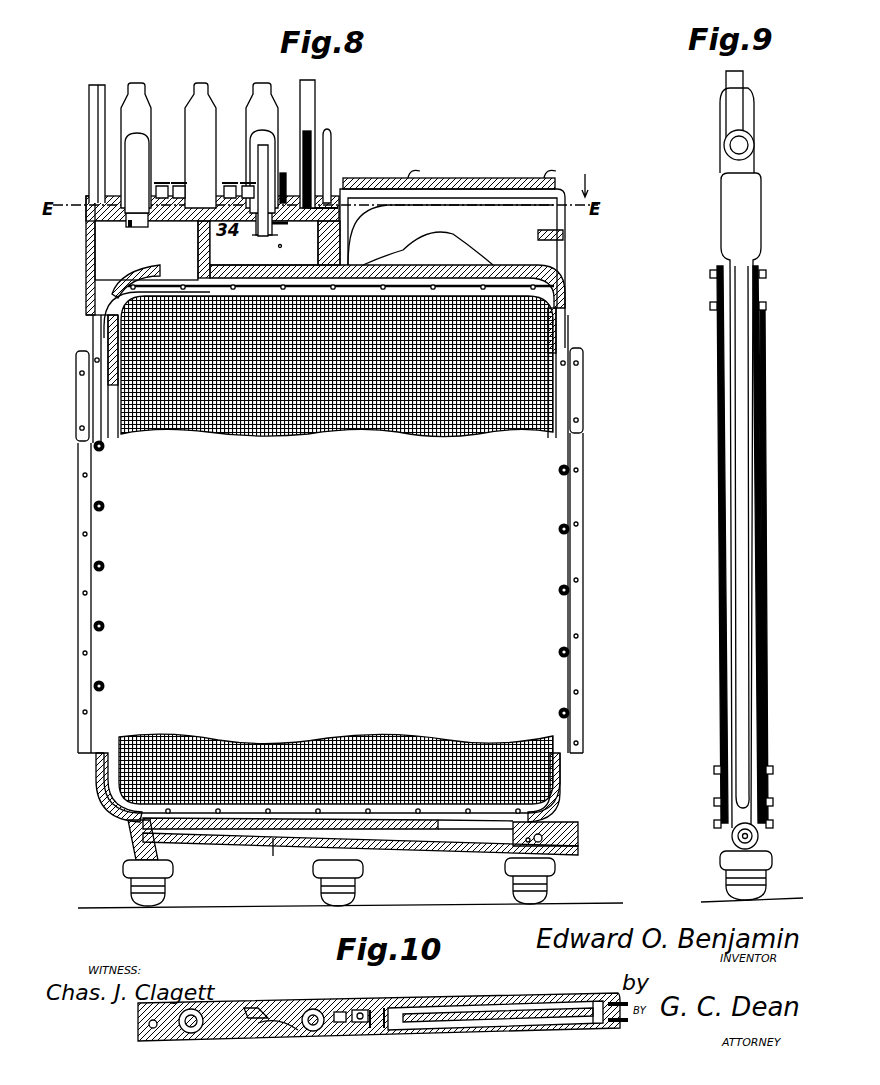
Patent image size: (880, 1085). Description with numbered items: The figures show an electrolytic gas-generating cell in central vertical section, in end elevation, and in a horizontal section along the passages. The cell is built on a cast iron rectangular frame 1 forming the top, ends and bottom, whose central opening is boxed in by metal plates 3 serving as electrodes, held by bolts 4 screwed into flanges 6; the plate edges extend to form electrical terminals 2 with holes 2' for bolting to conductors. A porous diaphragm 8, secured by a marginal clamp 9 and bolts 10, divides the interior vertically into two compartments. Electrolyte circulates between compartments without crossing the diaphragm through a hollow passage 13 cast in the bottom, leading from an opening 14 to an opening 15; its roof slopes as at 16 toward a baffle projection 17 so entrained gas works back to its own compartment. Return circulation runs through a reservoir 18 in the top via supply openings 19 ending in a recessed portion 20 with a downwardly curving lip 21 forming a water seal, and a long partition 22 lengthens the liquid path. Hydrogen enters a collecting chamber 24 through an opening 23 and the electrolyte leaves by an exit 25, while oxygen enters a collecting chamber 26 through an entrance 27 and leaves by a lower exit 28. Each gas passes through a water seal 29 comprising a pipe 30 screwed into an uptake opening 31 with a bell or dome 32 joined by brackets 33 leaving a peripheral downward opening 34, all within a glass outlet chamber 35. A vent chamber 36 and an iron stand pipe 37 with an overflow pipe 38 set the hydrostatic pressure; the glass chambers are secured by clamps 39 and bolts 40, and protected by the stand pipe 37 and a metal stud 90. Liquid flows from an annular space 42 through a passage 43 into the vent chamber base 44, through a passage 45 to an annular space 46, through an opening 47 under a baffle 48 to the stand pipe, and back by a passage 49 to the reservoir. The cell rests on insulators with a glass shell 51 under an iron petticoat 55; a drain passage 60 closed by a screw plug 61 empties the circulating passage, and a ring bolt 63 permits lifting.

In FIG. 8, the rectangular frame 1 is at (547, 336).
In FIG. 9, the rectangular frame 1 is at (750, 230).
In FIG. 8, the electrical terminals 2 is at (325, 563).
In FIG. 8, the holes 2' is at (598, 424).
In FIG. 8, the metal plates 3 is at (329, 595).
In FIG. 9, the metal plates 3 is at (712, 478).
In FIG. 9, the bolts 4 is at (759, 296).
In FIG. 8, the flanges 6 is at (68, 356).
In FIG. 8, the diaphragm 8 is at (409, 427).
In FIG. 8, the rectangular marginal clamp 9 is at (100, 800).
In FIG. 8, the bolts 10 is at (100, 378).
In FIG. 8, the hollow passage 13 is at (290, 834).
In FIG. 8, the opening 14 is at (475, 830).
In FIG. 8, the opening 15 is at (126, 838).
In FIG. 8, the sloping roof 16 is at (265, 848).
In FIG. 8, the baffle projection 17 is at (343, 846).
In FIG. 8, the reservoir 18 is at (455, 178).
In FIG. 10, the reservoir 18 is at (454, 1010).
In FIG. 8, the supply openings 19 is at (556, 263).
In FIG. 10, the supply openings 19 is at (558, 996).
In FIG. 8, the recessed portion 20 is at (548, 290).
In FIG. 8, the downwardly curving lip 21 is at (550, 278).
In FIG. 8, the partition 22 is at (452, 248).
In FIG. 10, the partition 22 is at (490, 1004).
In FIG. 8, the opening 23 is at (310, 250).
In FIG. 8, the collecting chamber 24 is at (262, 234).
In FIG. 8, the exit 25 is at (260, 243).
In FIG. 8, the collecting chamber 26 is at (146, 250).
In FIG. 8, the entrance 27 is at (147, 280).
In FIG. 8, the exit 28 is at (96, 300).
In FIG. 8, the water seals 29 is at (128, 160).
In FIG. 8, the pipe 30 is at (260, 145).
In FIG. 8, the uptake opening 31 is at (272, 216).
In FIG. 8, the bell or dome 32 is at (248, 130).
In FIG. 8, the brackets 33 is at (275, 165).
In FIG. 8, the peripheral downward opening 34 is at (100, 206).
In FIG. 8, the outlet chamber 35 is at (113, 104).
In FIG. 8, the vent chamber 36 is at (184, 108).
In FIG. 8, the stand pipe 37 is at (307, 86).
In FIG. 9, the stand pipe 37 is at (724, 78).
In FIG. 8, the overflow pipe 38 is at (304, 130).
In FIG. 10, the overflow pipe 38 is at (365, 1020).
In FIG. 8, the clamps 39 is at (156, 178).
In FIG. 8, the bolts 40 is at (55, 168).
In FIG. 10, the annular space 42 is at (190, 1008).
In FIG. 10, the passage 43 is at (213, 1026).
In FIG. 10, the vent chamber base 44 is at (250, 1020).
In FIG. 10, the passage 45 is at (284, 1004).
In FIG. 10, the annular space 46 is at (306, 1022).
In FIG. 10, the opening 47 is at (332, 1004).
In FIG. 8, the baffle 48 is at (281, 238).
In FIG. 10, the baffle 48 is at (348, 1020).
In FIG. 8, the passage 49 is at (310, 201).
In FIG. 10, the passage 49 is at (378, 1000).
In FIG. 8, the insulating shell 51 is at (140, 892).
In FIG. 8, the petticoat 55 is at (500, 860).
In FIG. 8, the passage 60 is at (525, 840).
In FIG. 8, the screw plug 61 is at (565, 822).
In FIG. 9, the screw plug 61 is at (751, 828).
In FIG. 8, the ring bolt 63 is at (321, 145).
In FIG. 9, the ring bolt 63 is at (716, 138).
In FIG. 8, the vertical rod or metal stud 90 is at (82, 92).